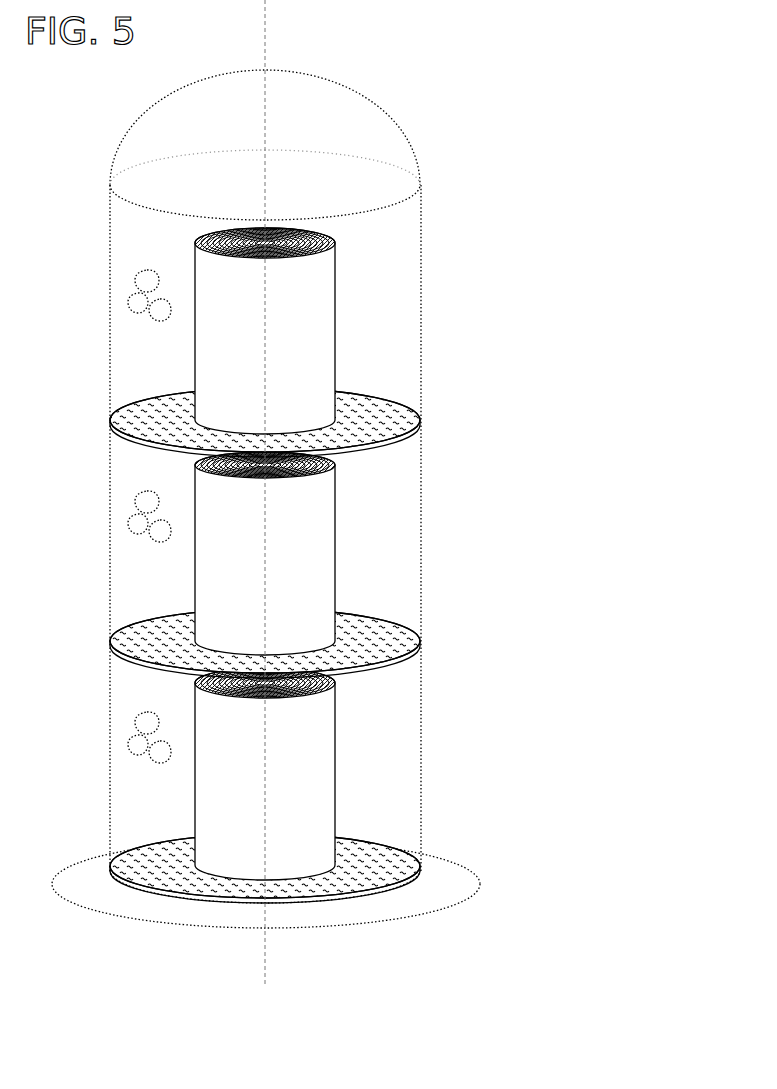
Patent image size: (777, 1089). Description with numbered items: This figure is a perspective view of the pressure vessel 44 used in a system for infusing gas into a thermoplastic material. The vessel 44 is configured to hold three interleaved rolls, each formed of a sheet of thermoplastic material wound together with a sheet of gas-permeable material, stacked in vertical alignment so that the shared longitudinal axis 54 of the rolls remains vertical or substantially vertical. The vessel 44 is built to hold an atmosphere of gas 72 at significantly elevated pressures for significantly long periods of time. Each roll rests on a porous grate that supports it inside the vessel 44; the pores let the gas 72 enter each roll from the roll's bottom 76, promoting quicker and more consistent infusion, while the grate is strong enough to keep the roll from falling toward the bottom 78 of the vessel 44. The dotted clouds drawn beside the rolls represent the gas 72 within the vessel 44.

The vessel 44 is at (421, 528).
The longitudinal axis 54 is at (265, 30).
The gas 72 is at (138, 300).
The bottom of the roll 76 is at (218, 430).
The bottom of the vessel 78 is at (340, 898).